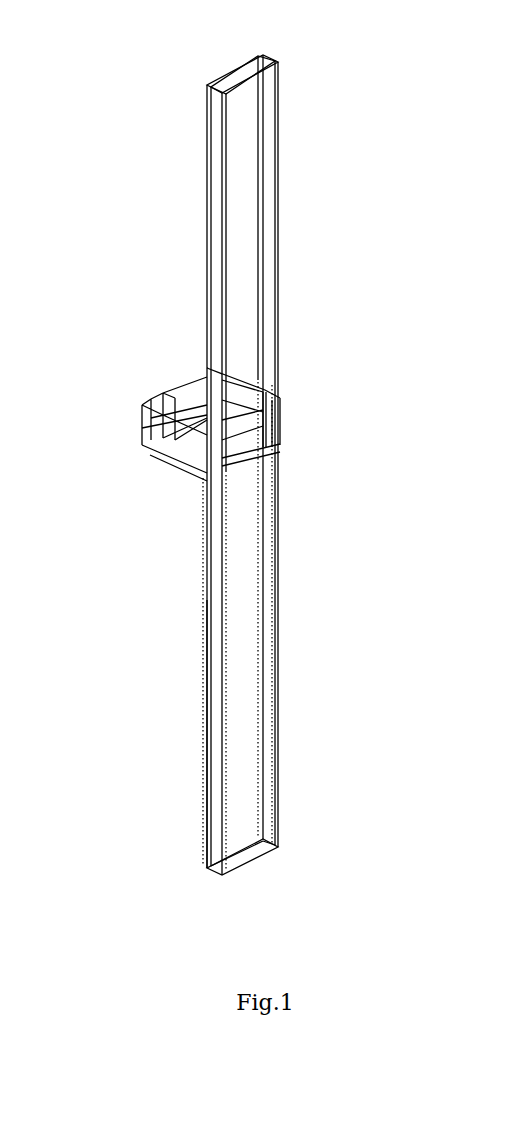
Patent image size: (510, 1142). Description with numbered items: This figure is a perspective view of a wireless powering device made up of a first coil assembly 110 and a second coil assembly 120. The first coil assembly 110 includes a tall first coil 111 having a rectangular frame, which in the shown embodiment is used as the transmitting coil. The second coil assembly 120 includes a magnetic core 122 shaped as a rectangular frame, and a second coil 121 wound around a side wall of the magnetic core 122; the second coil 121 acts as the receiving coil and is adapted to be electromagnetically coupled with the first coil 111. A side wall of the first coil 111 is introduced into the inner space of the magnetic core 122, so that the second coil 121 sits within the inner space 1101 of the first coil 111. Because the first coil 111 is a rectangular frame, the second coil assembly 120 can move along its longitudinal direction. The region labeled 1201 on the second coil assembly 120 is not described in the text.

The first coil assembly 110 is at (200, 78).
The inner space 1101 is at (247, 520).
The first coil 111 is at (207, 688).
The second coil assembly 120 is at (157, 468).
The slot 1201 is at (191, 415).
The second coil 121 is at (247, 376).
The magnetic core 122 is at (148, 432).